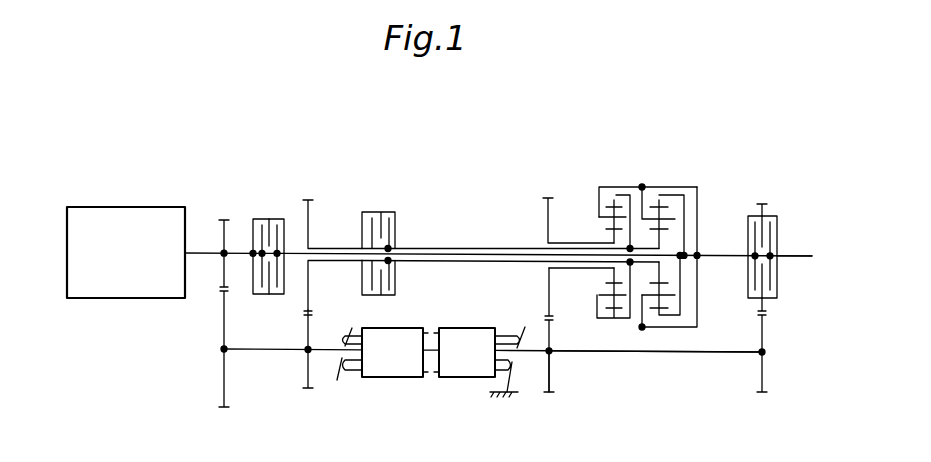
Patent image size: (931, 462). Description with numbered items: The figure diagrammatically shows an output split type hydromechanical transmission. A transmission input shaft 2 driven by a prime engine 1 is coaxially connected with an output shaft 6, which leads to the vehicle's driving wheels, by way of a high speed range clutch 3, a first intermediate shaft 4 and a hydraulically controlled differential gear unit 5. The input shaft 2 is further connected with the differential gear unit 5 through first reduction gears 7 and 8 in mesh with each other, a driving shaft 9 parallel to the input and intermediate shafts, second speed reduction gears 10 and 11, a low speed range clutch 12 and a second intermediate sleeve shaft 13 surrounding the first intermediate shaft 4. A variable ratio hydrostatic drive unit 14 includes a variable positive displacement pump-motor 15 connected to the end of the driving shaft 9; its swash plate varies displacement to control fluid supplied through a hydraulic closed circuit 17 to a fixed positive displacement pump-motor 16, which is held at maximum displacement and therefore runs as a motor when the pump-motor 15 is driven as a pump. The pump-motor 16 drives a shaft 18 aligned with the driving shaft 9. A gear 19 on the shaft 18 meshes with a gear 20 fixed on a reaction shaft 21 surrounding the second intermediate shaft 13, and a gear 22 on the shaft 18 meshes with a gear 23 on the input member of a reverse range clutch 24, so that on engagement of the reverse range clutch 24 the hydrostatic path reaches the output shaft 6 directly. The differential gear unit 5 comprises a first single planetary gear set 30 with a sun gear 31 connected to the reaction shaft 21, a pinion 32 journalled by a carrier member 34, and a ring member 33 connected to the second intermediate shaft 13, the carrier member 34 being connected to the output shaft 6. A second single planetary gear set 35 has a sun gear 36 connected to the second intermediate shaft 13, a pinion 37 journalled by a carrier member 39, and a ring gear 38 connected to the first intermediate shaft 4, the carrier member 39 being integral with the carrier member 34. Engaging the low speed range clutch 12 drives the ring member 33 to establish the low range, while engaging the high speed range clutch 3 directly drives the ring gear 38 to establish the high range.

The prime engine 1 is at (118, 262).
The transmission input shaft 2 is at (202, 252).
The high speed range clutch 3 is at (268, 219).
The first intermediate shaft 4 is at (455, 248).
The hydraulically controlled differential gear unit 5 is at (544, 242).
The output shaft 6 is at (783, 257).
The first reduction gear 7 is at (226, 230).
The first reduction gear 8 is at (224, 391).
The driving shaft 9 is at (271, 349).
The second speed reduction gear 10 is at (308, 378).
The second speed reduction gear 11 is at (309, 207).
The low speed range clutch 12 is at (395, 213).
The second intermediate sleeve shaft 13 is at (510, 250).
The variable ratio hydrostatic drive unit 14 is at (431, 365).
The variable positive displacement pump-motor 15 is at (380, 373).
The fixed positive displacement pump-motor 16 is at (467, 373).
The hydraulic closed circuit 17 is at (428, 330).
The shaft 18 is at (631, 358).
The gear 19 is at (549, 378).
The gear 20 is at (549, 309).
The reaction shaft 21 is at (575, 270).
The gear 22 is at (762, 383).
The gear 23 is at (757, 208).
The reverse range clutch 24 is at (748, 230).
The first single planetary gear set 30 is at (608, 170).
The sun gear 31 is at (608, 240).
The pinion 32 is at (606, 215).
The ring member 33 is at (612, 207).
The carrier member 34 is at (597, 313).
The second single planetary gear set 35 is at (687, 175).
The sun gear 36 is at (664, 279).
The pinion 37 is at (664, 294).
The ring gear 38 is at (664, 316).
The carrier member 39 is at (643, 328).